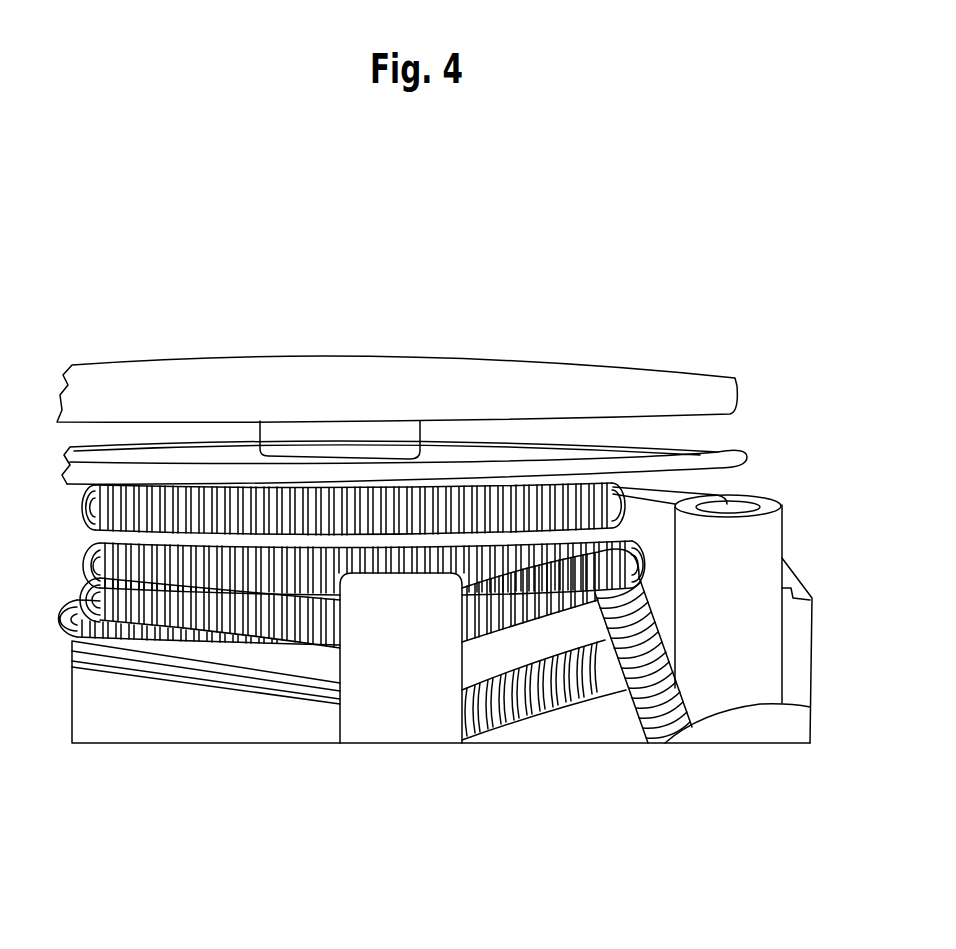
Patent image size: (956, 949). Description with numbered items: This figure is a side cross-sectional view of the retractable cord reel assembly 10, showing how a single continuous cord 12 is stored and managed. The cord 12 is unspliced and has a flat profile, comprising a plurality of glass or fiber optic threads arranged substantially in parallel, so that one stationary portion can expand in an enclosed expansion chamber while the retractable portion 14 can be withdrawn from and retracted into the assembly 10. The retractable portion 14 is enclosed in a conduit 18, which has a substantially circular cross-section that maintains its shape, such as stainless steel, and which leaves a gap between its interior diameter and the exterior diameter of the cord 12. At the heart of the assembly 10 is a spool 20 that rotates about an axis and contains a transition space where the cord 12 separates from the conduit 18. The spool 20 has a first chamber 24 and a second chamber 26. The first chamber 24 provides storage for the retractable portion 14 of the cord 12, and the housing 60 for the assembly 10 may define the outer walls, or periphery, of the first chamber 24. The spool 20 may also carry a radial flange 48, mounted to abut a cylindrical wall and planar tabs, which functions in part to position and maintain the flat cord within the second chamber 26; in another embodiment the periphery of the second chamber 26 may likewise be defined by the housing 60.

The retractable cord reel assembly 10 is at (210, 685).
The cord 12 is at (373, 432).
The retractable portion 14 is at (605, 673).
The conduit 18 is at (623, 687).
The spool 20 is at (737, 450).
The first chamber 24 is at (248, 633).
The second chamber 26 is at (697, 435).
The radial flange 48 is at (517, 372).
The housing 60 is at (168, 683).